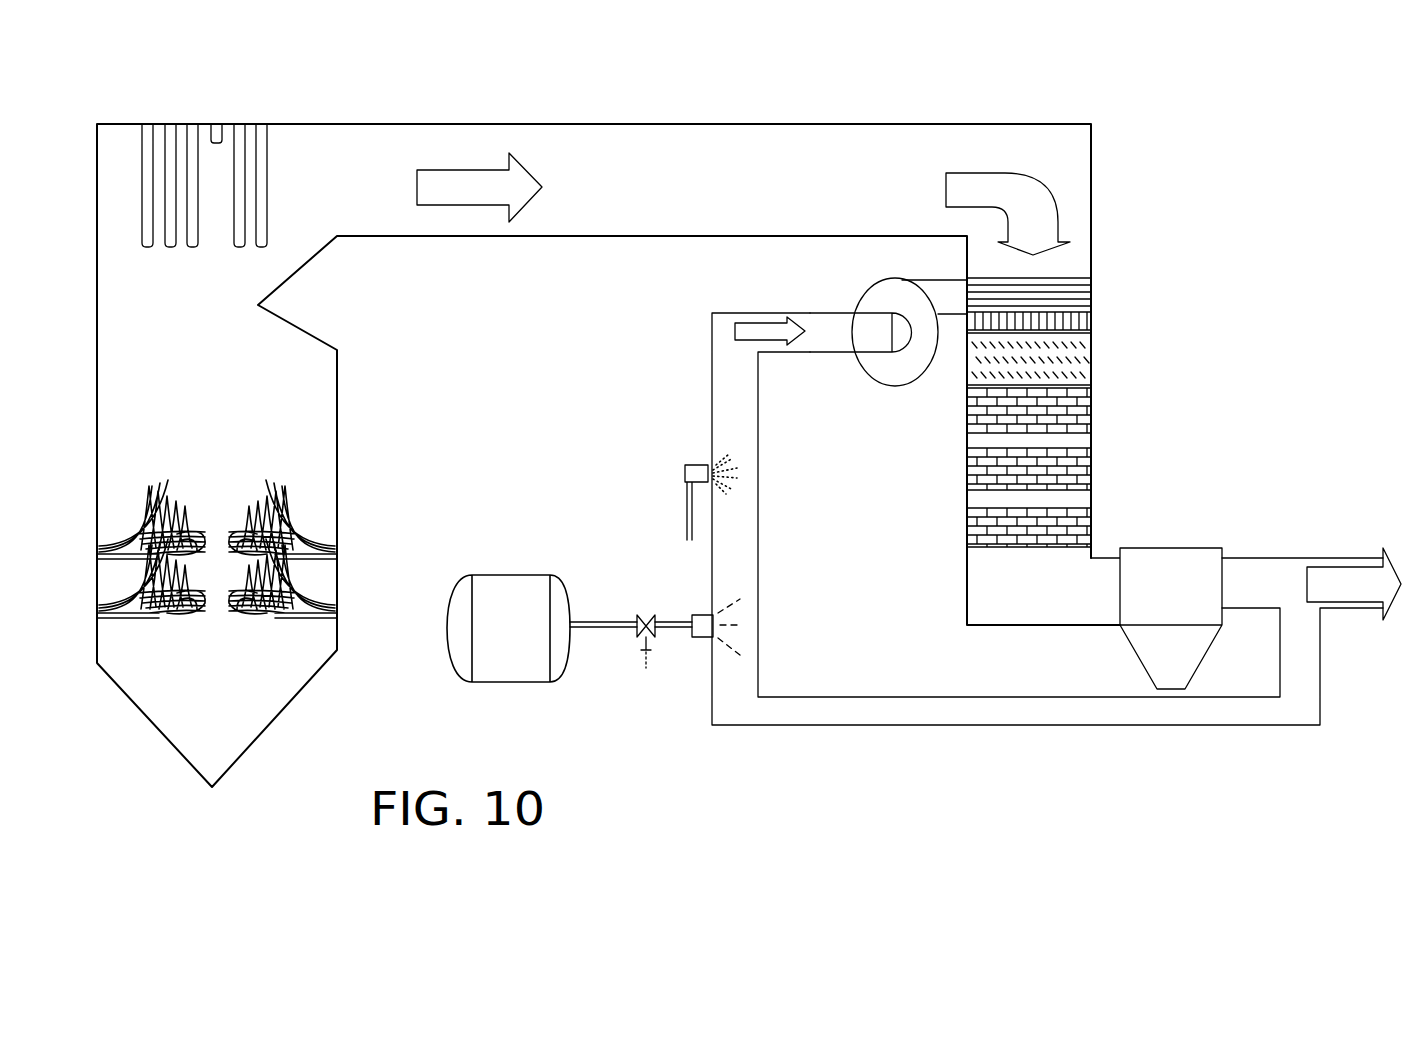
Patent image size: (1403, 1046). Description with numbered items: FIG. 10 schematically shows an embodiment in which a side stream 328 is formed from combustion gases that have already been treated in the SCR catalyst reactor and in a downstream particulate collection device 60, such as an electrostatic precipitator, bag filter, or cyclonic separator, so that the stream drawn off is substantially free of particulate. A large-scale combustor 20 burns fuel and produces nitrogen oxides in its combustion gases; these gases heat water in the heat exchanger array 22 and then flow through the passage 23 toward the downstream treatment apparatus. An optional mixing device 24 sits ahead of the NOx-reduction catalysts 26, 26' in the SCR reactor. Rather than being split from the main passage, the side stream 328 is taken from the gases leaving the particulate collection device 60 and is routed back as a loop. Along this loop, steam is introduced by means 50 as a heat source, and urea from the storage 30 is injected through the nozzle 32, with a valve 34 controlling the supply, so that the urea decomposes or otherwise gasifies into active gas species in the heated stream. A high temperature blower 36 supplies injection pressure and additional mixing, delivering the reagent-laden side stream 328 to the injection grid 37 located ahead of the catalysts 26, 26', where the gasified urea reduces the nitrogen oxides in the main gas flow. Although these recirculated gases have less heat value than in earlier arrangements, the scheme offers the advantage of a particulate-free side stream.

The combustor 20 is at (237, 487).
The heat exchanger array 22 is at (252, 220).
The passage 23 is at (653, 190).
The mixing device 24 is at (1070, 372).
The NOx-reduction catalyst 26 is at (1000, 554).
The NOx-reduction catalyst 26' is at (993, 492).
The storage 30 is at (535, 626).
The nozzle 32 is at (707, 615).
The valve 34 is at (642, 652).
The high temperature blower 36 is at (853, 315).
The injection grid 37 is at (1063, 310).
The steam introduction means 50 is at (685, 472).
The particulate collection device 60 is at (1193, 604).
The side stream 328 is at (720, 357).